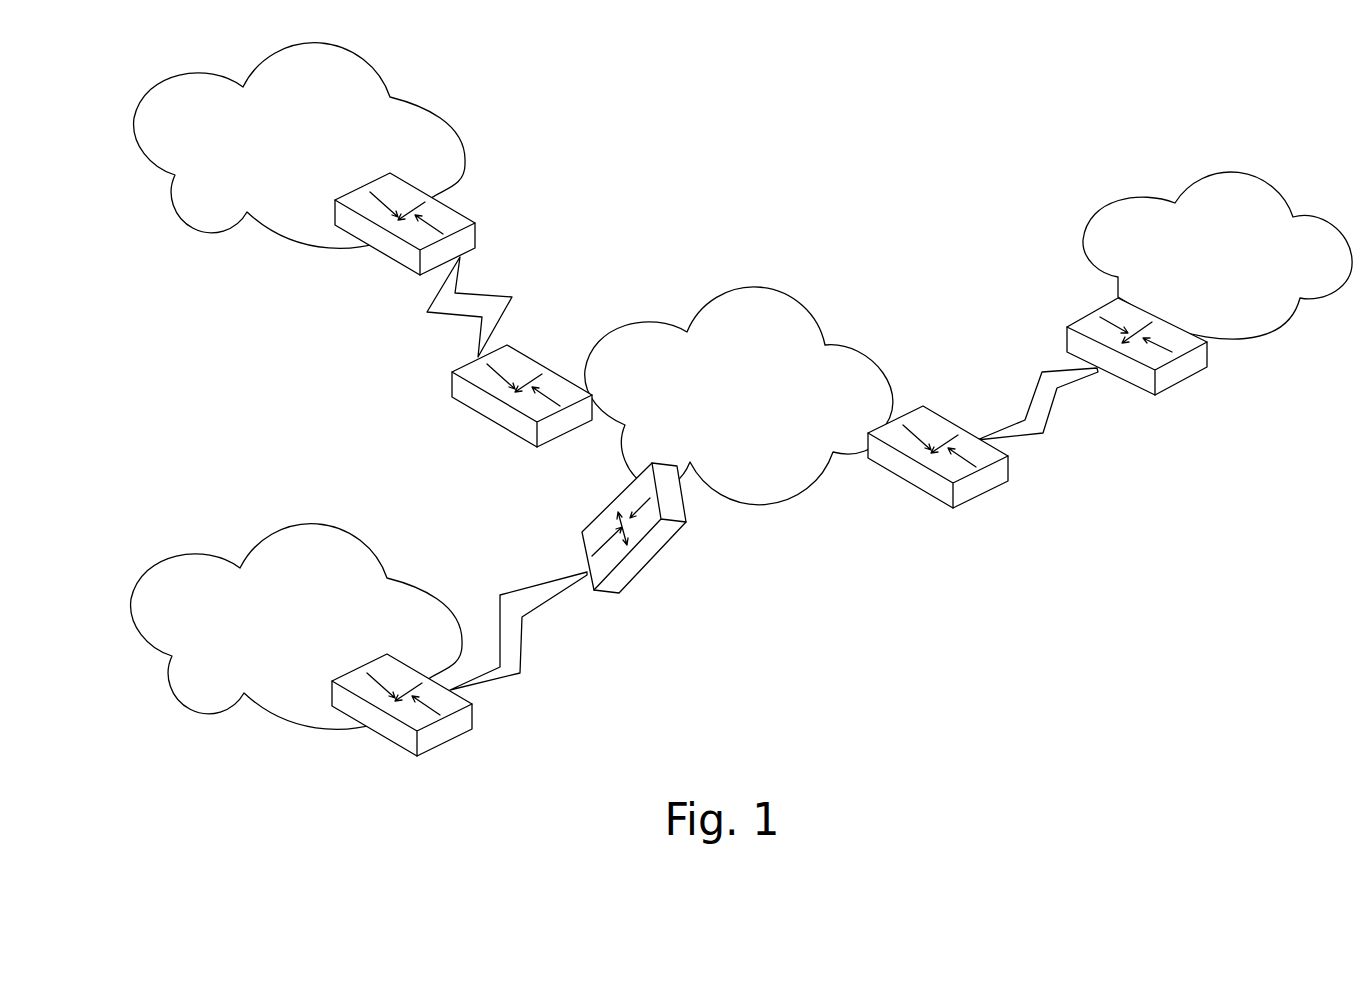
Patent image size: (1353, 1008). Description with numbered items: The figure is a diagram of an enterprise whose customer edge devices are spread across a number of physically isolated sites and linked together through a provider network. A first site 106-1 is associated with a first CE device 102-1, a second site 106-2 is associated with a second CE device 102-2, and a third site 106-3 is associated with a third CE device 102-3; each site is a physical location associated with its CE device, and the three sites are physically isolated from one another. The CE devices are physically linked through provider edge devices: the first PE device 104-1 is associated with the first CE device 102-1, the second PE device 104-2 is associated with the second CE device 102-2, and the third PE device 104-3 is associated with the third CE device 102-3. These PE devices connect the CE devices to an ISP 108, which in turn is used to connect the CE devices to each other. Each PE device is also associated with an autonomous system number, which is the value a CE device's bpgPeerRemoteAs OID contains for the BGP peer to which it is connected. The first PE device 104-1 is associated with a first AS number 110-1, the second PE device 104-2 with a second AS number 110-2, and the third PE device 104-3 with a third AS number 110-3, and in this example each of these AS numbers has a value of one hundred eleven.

The first site 106-1 is at (387, 78).
The first CE device 102-1 is at (457, 208).
The first PE device 104-1 is at (515, 348).
The first AS number 110-1 is at (507, 477).
The ISP 108 is at (812, 318).
The third PE device 104-3 is at (643, 573).
The third AS number 110-3 is at (713, 582).
The second PE device 104-2 is at (993, 493).
The second AS number 110-2 is at (905, 555).
The second site 106-2 is at (1270, 180).
The second CE device 102-2 is at (1188, 380).
The third site 106-3 is at (197, 710).
The third CE device 102-3 is at (463, 733).